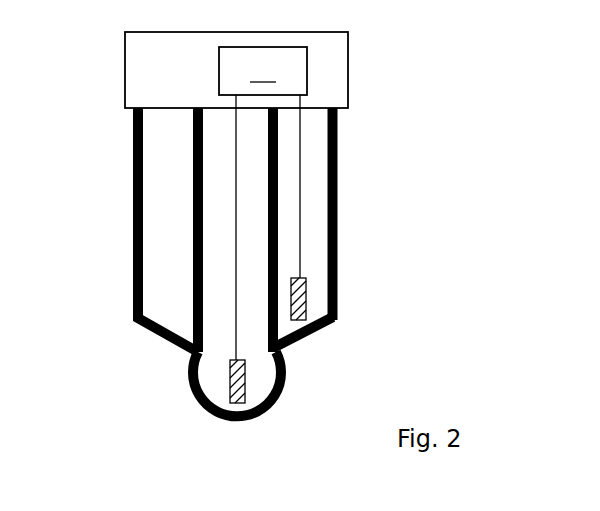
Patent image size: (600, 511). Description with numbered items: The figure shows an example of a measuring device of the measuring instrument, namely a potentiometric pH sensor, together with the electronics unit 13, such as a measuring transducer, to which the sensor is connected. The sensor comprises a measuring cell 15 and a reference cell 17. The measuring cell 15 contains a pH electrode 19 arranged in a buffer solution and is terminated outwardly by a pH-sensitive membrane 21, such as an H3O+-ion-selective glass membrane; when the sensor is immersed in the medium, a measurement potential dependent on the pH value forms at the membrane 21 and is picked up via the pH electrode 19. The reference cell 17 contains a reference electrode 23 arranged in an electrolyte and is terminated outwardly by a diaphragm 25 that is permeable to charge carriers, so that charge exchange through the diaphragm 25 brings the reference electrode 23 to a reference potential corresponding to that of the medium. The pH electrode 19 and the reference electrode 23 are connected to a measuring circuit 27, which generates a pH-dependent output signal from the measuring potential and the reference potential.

The electronics unit 13 is at (147, 85).
The measuring cell 15 is at (250, 242).
The reference cell 17 is at (313, 170).
The pH electrode 19 is at (230, 377).
The pH-sensitive membrane 21 is at (267, 410).
The reference electrode 23 is at (306, 307).
The diaphragm 25 is at (313, 337).
The measuring circuit 27 is at (263, 71).